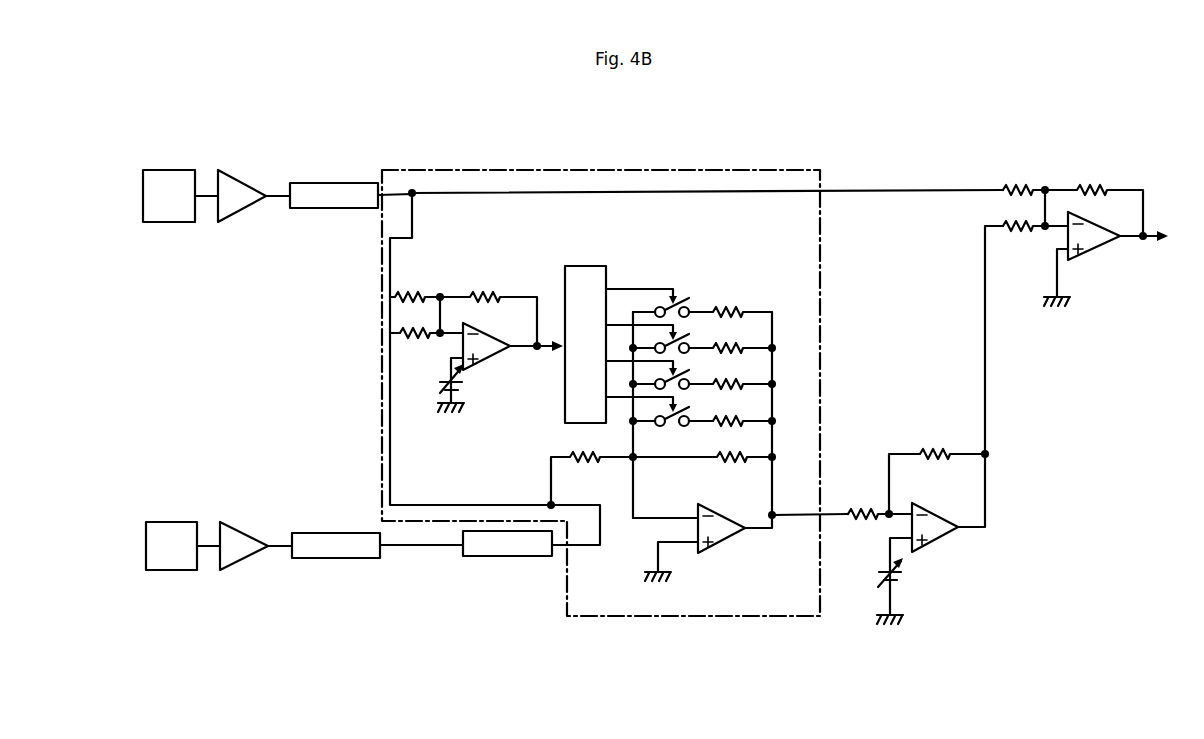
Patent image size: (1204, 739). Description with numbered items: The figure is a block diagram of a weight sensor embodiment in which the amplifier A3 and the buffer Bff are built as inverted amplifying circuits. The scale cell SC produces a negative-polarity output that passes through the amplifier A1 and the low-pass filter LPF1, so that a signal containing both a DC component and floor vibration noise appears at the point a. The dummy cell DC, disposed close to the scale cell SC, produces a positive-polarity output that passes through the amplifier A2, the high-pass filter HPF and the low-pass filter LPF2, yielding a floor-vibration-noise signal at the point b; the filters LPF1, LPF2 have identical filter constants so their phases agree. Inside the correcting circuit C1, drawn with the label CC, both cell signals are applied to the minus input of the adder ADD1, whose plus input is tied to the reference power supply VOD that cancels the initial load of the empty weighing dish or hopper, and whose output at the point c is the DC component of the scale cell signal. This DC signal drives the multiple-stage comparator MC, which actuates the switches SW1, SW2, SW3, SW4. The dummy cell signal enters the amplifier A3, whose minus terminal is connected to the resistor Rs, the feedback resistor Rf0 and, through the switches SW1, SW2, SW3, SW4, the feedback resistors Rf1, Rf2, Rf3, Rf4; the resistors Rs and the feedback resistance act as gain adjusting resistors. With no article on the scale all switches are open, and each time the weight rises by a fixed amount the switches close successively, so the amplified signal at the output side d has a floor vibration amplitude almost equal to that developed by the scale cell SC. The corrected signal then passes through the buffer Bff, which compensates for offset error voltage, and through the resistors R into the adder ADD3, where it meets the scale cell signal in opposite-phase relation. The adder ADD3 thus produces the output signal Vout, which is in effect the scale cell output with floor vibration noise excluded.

The scale cell SC is at (143, 174).
The dummy cell DC is at (146, 524).
The amplifier A1 is at (247, 180).
The amplifier A2 is at (247, 531).
The low-pass filter LPF1 is at (334, 195).
The low-pass filter LPF2 is at (507, 543).
The high-pass filter HPF is at (336, 545).
The correcting circuit C1 is at (700, 169).
The correcting circuit label CC is at (785, 169).
The adder ADD1 is at (487, 353).
The reference power supply VOD is at (432, 385).
The multiple-stage comparator MC is at (578, 272).
The switch SW1 is at (672, 411).
The switch SW2 is at (672, 374).
The switch SW3 is at (672, 338).
The switch SW4 is at (672, 302).
The feedback resistor Rf0 is at (702, 447).
The feedback resistor Rf1 is at (730, 411).
The feedback resistor Rf2 is at (730, 374).
The feedback resistor Rf3 is at (730, 338).
The feedback resistor Rf4 is at (730, 302).
The resistor Rs is at (592, 468).
The amplifier A3 is at (722, 540).
The resistor R is at (916, 473).
The buffer Bff is at (928, 548).
The adder ADD3 is at (1085, 250).
The output signal Vout is at (1150, 251).
The point a is at (410, 183).
The point b is at (597, 556).
The point c is at (536, 355).
The output side d is at (768, 540).